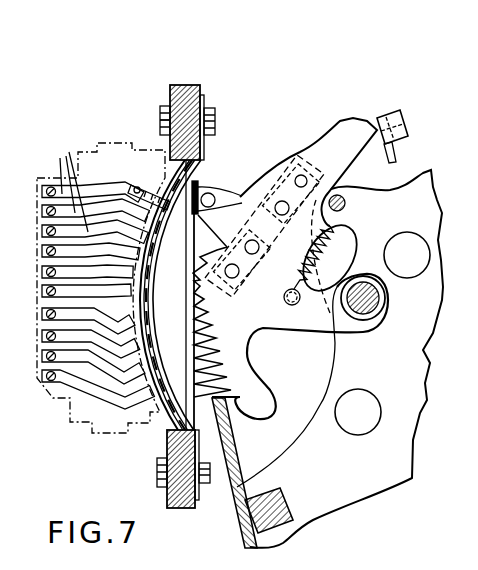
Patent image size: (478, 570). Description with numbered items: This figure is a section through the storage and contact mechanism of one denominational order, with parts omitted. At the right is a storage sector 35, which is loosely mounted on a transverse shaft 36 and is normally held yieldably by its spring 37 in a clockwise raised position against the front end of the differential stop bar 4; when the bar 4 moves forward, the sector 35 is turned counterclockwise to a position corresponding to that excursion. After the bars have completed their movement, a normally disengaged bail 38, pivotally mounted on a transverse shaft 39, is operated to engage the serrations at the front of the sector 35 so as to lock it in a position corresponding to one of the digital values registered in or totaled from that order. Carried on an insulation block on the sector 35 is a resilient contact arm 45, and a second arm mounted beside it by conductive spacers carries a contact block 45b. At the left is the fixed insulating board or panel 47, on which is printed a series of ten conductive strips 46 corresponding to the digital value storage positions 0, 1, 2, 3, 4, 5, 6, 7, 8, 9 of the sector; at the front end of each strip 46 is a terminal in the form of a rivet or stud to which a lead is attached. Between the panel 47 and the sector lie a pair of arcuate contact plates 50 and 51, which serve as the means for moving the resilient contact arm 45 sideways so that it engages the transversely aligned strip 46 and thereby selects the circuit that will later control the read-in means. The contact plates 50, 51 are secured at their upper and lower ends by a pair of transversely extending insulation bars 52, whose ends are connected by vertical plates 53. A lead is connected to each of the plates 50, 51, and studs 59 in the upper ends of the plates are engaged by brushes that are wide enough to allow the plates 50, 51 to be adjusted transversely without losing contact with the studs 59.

The digital value storage position 0 is at (35, 199).
The digital value storage position 1 is at (35, 218).
The digital value storage position 2 is at (35, 238).
The digital value storage position 3 is at (35, 258).
The differential stop bar 4 is at (35, 279).
The digital value storage position 5 is at (35, 298).
The digital value storage position 6 is at (35, 321).
The digital value storage position 7 is at (35, 343).
The digital value storage position 8 is at (35, 363).
The digital value storage position 9 is at (35, 383).
The sector 35 is at (256, 388).
The transverse shaft 36 is at (372, 300).
The spring 37 is at (338, 240).
The bail 38 is at (230, 466).
The transverse shaft 39 is at (291, 522).
The resilient contact arm 45 is at (197, 190).
The contact block 45b is at (141, 178).
The printed circuitry conductive strips 46 is at (65, 187).
The insulating board or panel 47 is at (88, 407).
The arcuate contact plate 50 is at (148, 343).
The arcuate contact plate 51 is at (145, 281).
The insulation bar 52 is at (188, 88).
The vertical plate 53 is at (196, 340).
The stud 59 is at (162, 120).